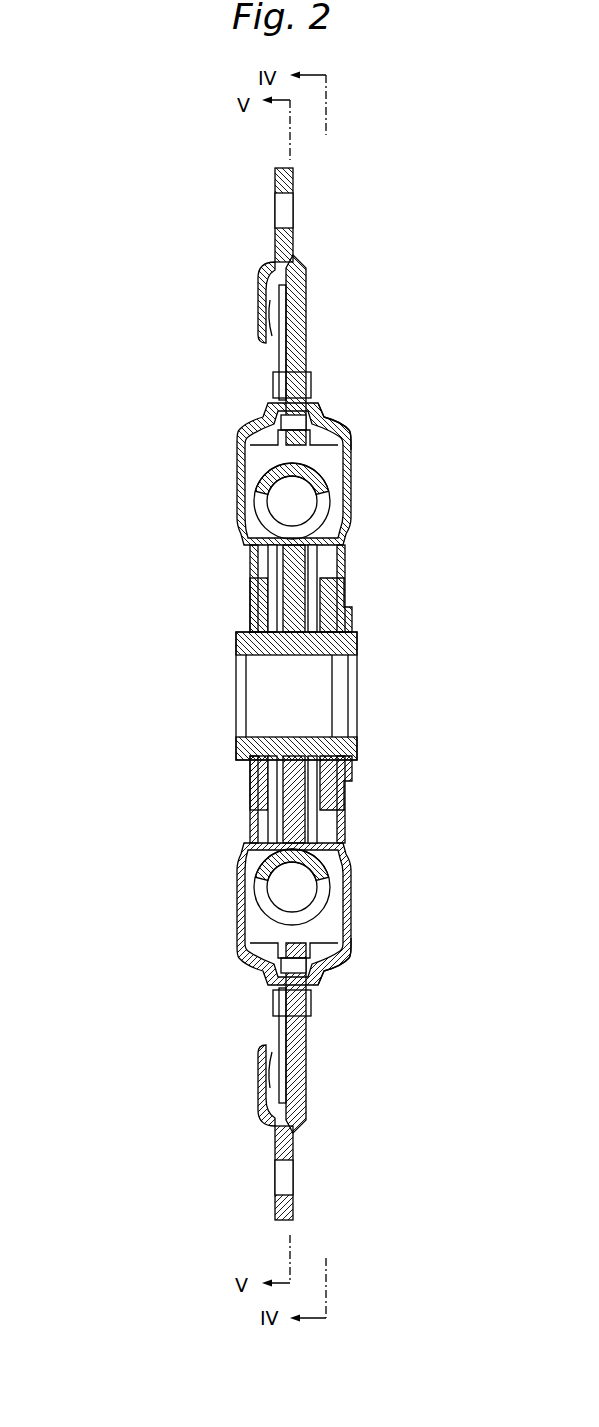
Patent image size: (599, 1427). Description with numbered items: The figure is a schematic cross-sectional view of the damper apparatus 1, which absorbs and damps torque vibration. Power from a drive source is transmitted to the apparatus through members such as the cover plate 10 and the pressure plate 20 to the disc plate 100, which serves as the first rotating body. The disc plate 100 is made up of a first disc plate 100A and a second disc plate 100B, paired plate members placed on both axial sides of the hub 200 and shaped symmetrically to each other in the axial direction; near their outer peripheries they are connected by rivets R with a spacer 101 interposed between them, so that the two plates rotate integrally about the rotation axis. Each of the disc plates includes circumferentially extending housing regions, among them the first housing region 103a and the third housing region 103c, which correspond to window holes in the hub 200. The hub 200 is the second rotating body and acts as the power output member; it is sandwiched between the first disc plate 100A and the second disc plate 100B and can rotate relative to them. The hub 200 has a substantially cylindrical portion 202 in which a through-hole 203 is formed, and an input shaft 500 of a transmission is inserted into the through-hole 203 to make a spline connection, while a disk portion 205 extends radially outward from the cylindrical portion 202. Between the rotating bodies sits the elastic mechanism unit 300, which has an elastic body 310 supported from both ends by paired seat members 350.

The damper apparatus 1 is at (474, 178).
The cover plate 10 is at (313, 266).
The spacer 101 is at (306, 311).
The pressure plate 20 is at (265, 348).
The rivet R is at (327, 365).
The disc plate 100 is at (276, 685).
The first disc plate 100A is at (249, 472).
The second disc plate 100B is at (367, 685).
The first housing region 103a is at (340, 440).
The third housing region 103c is at (330, 946).
The seat member 350 is at (268, 468).
The elastic mechanism unit 300 is at (303, 500).
The elastic body 310 is at (325, 508).
The hub 200 is at (298, 570).
The disk portion 205 is at (290, 598).
The cylindrical portion 202 is at (340, 633).
The through-hole 203 is at (350, 660).
The input shaft 500 is at (343, 696).